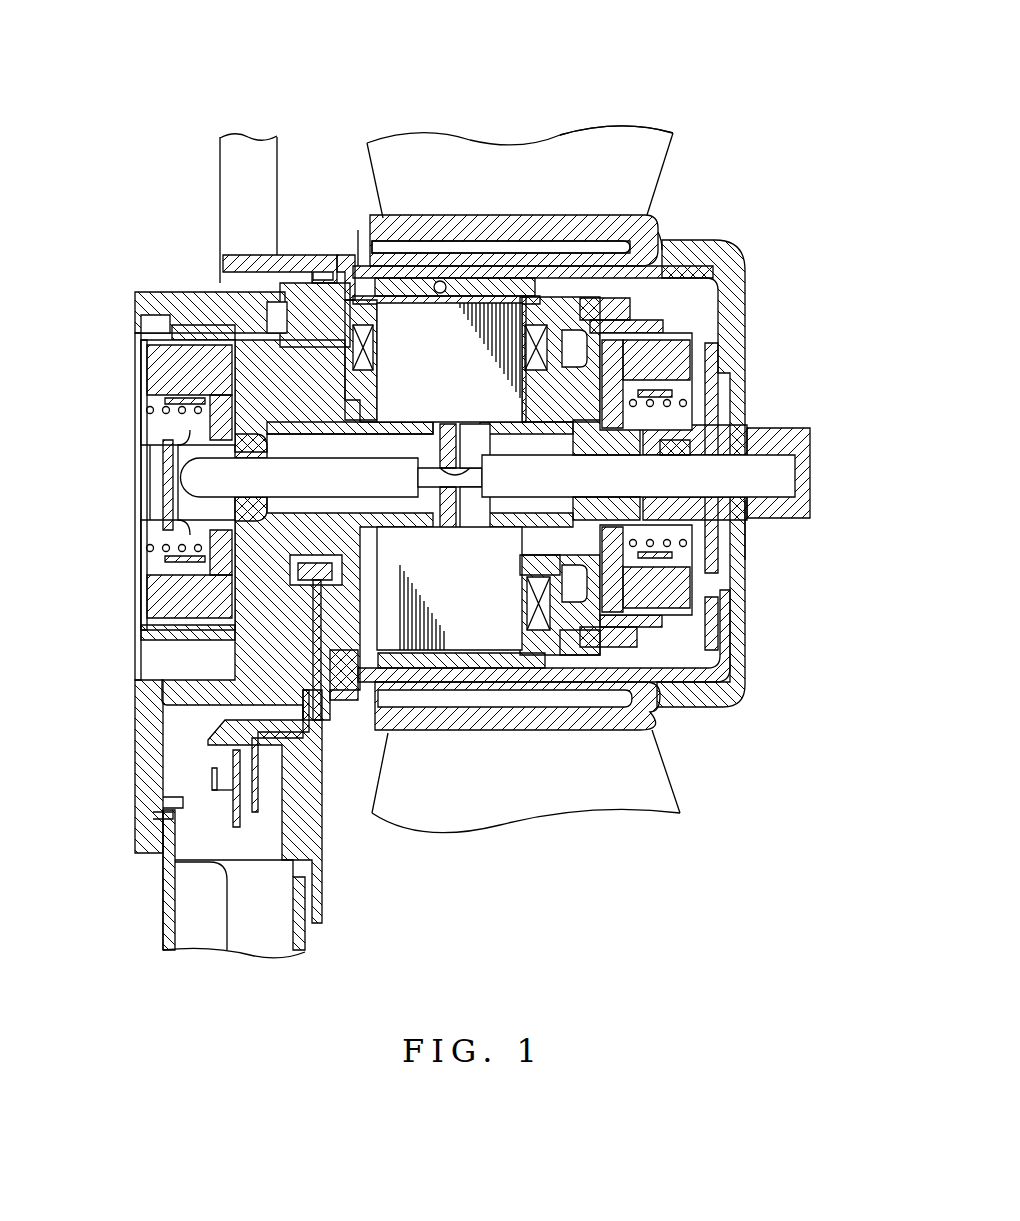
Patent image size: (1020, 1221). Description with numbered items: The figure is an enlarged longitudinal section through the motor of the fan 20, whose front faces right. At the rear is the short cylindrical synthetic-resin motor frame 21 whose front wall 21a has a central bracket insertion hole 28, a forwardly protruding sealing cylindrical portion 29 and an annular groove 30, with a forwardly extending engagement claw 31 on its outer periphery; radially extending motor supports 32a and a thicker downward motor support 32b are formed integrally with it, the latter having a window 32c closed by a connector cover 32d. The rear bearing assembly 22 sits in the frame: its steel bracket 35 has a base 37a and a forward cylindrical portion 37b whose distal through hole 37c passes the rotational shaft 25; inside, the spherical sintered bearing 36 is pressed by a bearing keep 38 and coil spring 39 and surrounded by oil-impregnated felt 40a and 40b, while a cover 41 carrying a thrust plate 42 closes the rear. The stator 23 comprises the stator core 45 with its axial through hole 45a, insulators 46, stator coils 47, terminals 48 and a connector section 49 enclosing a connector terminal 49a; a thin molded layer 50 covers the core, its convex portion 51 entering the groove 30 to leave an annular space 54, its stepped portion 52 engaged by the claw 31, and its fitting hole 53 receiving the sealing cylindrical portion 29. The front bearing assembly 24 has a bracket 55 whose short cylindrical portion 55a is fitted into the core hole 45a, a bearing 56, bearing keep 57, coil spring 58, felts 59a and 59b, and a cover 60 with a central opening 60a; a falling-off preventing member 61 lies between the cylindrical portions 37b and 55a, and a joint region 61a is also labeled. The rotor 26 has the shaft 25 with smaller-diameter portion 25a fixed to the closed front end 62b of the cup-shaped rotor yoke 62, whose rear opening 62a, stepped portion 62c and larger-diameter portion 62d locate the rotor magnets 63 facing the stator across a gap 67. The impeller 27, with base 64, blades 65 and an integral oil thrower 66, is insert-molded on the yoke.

The fan 20 is at (728, 120).
The motor frame 21 is at (172, 290).
The front wall 21a is at (196, 358).
The rear bearing assembly 22 is at (136, 355).
The stator 23 is at (616, 300).
The front bearing assembly 24 is at (674, 326).
The rotational shaft 25 is at (702, 466).
The smaller-diameter portion 25a is at (430, 478).
The rotor 26 is at (748, 366).
The impeller 27 is at (668, 157).
The bracket insertion hole 28 is at (182, 428).
The sealing cylindrical portion 29 is at (378, 396).
The annular groove 30 is at (280, 284).
The engagement claw 31 is at (331, 262).
The motor support 32a is at (219, 170).
The motor support 32b is at (138, 772).
The window 32c is at (237, 885).
The connector cover 32d is at (163, 921).
The bracket 35 is at (166, 325).
The bearing 36 is at (200, 452).
The base 37a is at (186, 328).
The cylindrical portion 37b is at (362, 422).
The through hole 37c is at (424, 447).
The bearing keep 38 is at (152, 566).
The coil spring 39 is at (145, 542).
The oil-impregnated felt 40a is at (142, 590).
The oil-impregnated felt 40b is at (138, 608).
The cover 41 is at (140, 396).
The thrust plate 42 is at (176, 478).
The stator core 45 is at (500, 318).
The axial through hole 45a is at (500, 528).
The insulator 46 is at (566, 614).
The stator coil 47 is at (530, 614).
The terminal 48 is at (313, 562).
The connector section 49 is at (320, 845).
The connector terminal 49a is at (300, 765).
The molded layer 50 is at (358, 228).
The annular convex portion 51 is at (293, 300).
The stepped portion 52 is at (326, 270).
The fitting hole 53 is at (410, 578).
The annular space 54 is at (282, 633).
The bracket 55 is at (580, 602).
The cylindrical portion 55a is at (498, 436).
The bearing 56 is at (586, 512).
The bearing keep 57 is at (667, 560).
The coil spring 58 is at (670, 550).
The oil-impregnated felt 59a is at (682, 585).
The oil-impregnated felt 59b is at (674, 615).
The cover 60 is at (724, 690).
The central opening 60a is at (746, 531).
The falling-off preventing member 61 is at (448, 530).
The joint 61a is at (470, 466).
The rotor yoke 62 is at (676, 716).
The opening 62a is at (354, 700).
The front end 62b is at (732, 660).
The stepped portion 62c is at (535, 296).
The larger-diameter portion 62d is at (470, 296).
The rotor magnet 63 is at (430, 684).
The base 64 is at (665, 240).
The blade 65 is at (630, 122).
The oil thrower 66 is at (662, 464).
The gap 67 is at (415, 290).